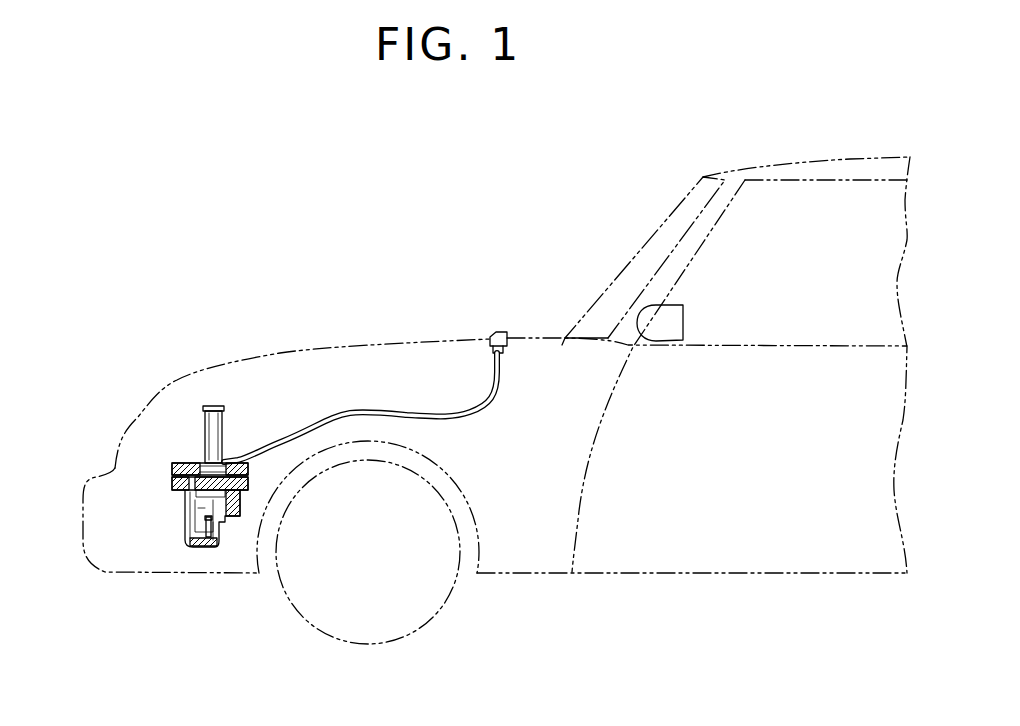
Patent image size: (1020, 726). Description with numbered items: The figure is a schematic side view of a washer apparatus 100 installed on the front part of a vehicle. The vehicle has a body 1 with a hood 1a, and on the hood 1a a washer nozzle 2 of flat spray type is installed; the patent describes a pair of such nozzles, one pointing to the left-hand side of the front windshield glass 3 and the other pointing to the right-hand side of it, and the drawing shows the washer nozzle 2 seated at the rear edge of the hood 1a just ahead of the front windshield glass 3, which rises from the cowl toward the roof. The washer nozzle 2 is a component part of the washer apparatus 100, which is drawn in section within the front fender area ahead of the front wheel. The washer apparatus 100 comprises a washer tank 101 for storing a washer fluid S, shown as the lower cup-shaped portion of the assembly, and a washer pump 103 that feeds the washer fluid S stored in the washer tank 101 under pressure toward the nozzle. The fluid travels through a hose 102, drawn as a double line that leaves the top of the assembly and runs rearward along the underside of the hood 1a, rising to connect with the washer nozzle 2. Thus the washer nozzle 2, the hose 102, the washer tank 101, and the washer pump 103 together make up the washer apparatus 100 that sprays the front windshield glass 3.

The body 1 is at (794, 158).
The hood 1a is at (372, 346).
The washer nozzle 2 is at (493, 333).
The front windshield glass 3 is at (652, 230).
The washer apparatus 100 is at (190, 418).
The washer tank 101 is at (213, 495).
The hose 102 is at (304, 424).
The washer pump 103 is at (215, 553).
The washer fluid S is at (203, 515).